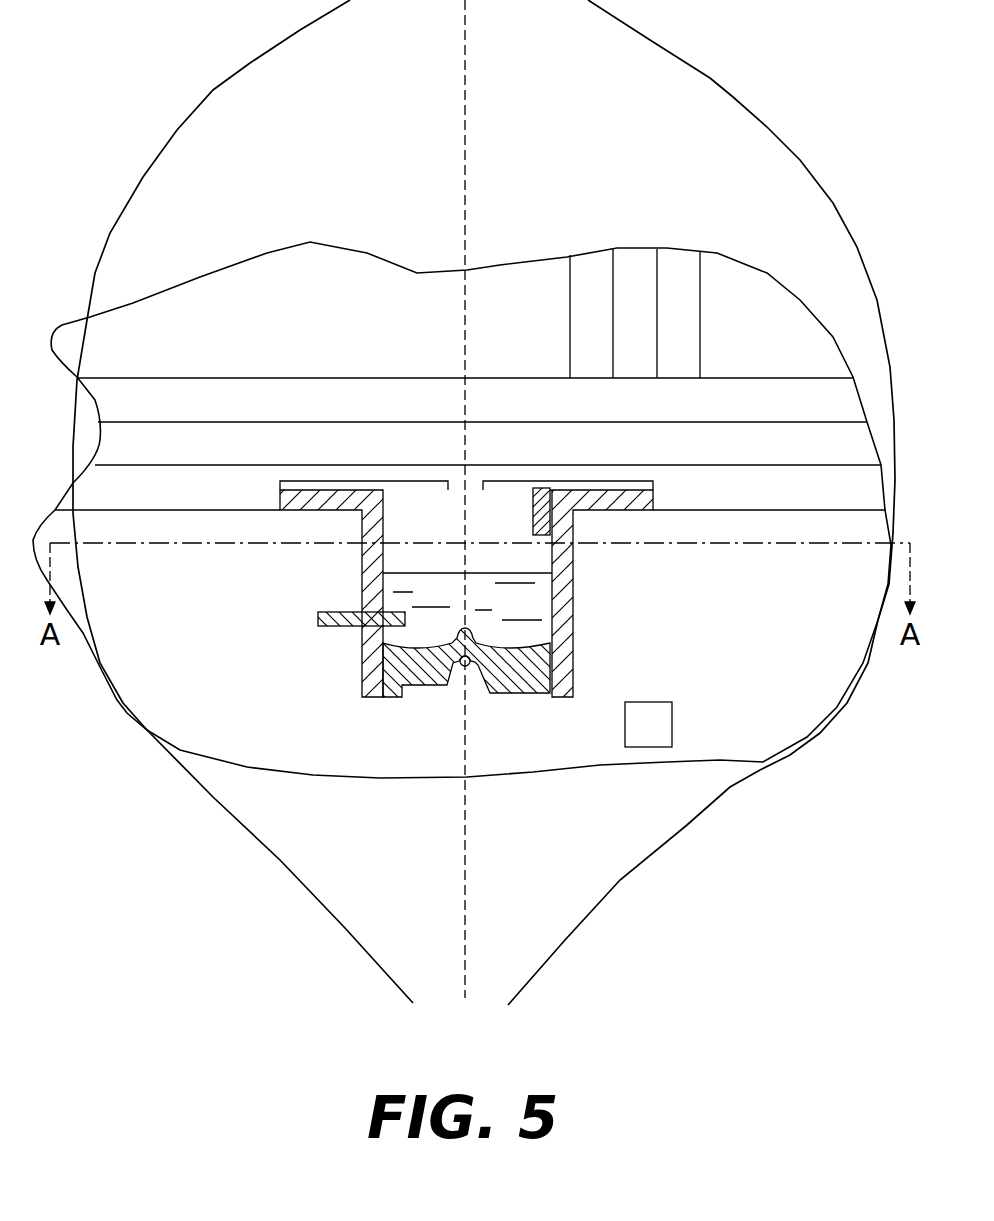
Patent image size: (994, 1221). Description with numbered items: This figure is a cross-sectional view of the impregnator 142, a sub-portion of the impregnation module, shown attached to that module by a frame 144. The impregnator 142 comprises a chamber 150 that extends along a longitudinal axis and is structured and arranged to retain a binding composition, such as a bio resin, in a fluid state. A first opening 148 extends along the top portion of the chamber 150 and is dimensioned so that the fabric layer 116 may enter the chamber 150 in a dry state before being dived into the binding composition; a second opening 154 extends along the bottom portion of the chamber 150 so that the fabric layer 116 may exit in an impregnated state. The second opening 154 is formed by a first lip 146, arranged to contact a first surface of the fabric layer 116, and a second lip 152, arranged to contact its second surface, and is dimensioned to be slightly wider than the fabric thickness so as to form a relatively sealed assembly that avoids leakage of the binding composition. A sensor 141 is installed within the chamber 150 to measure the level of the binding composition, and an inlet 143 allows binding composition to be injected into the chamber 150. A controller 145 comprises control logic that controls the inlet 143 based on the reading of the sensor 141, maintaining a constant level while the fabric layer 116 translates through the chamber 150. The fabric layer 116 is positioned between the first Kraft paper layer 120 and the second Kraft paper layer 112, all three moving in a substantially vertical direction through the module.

The second Kraft paper layer 112 is at (710, 78).
The first Kraft paper layer 120 is at (215, 90).
The impregnator 142 is at (325, 157).
The fabric layer 116 is at (467, 310).
The frame 144 is at (302, 378).
The chamber 150 is at (445, 590).
The first opening 148 is at (478, 488).
The sensor 141 is at (535, 488).
The inlet 143 is at (334, 628).
The second opening 154 is at (462, 660).
The first lip 146 is at (412, 688).
The second lip 152 is at (528, 674).
The controller 145 is at (648, 747).